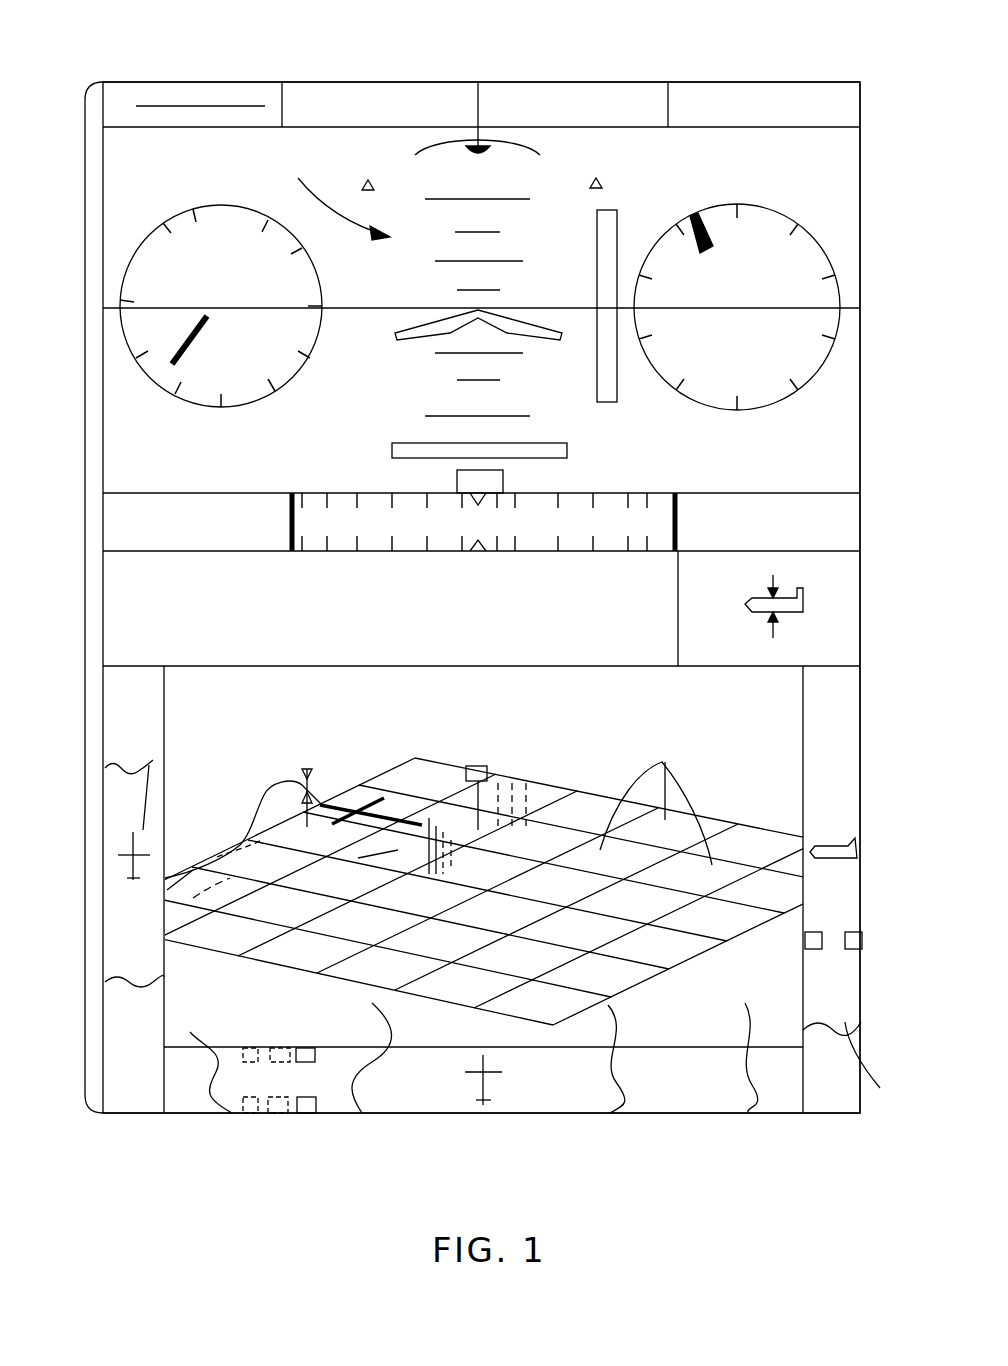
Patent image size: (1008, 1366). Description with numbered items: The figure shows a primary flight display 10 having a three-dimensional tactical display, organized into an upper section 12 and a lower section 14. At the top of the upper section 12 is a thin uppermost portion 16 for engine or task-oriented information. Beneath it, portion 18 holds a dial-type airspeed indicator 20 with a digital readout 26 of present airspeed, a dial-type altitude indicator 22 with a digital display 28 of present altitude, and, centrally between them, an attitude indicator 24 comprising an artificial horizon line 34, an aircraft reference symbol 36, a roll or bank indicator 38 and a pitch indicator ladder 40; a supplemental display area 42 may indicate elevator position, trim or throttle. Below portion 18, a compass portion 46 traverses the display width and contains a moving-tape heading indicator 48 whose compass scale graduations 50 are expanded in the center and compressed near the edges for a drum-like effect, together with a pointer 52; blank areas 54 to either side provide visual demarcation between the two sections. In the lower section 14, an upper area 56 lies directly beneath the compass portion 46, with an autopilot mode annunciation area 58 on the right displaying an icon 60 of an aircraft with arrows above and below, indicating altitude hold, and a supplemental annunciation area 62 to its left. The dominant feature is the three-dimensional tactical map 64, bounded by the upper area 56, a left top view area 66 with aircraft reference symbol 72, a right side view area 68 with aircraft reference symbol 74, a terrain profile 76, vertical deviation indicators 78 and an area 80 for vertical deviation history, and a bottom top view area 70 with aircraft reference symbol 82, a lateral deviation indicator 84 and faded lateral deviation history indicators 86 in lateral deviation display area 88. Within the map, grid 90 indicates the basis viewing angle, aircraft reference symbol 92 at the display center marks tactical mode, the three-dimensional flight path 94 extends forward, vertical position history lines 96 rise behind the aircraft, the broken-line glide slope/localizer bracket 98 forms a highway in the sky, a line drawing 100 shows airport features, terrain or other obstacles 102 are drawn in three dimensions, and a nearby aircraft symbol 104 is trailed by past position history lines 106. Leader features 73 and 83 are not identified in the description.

The primary flight display with three-dimensional tactical display 10 is at (198, 68).
The upper section 12 is at (88, 135).
The lower section 14 is at (88, 1105).
The uppermost portion 16 is at (862, 84).
The instrument portion 18 is at (864, 133).
The airspeed indicator 20 is at (205, 220).
The altitude indicator 22 is at (815, 250).
The attitude indicator 24 is at (326, 194).
The digital readout 26 is at (200, 290).
The digital display 28 is at (754, 292).
The artificial horizon line 34 is at (366, 308).
The aircraft reference symbol 36 is at (410, 338).
The roll or bank indicator 38 is at (432, 150).
The pitch indicator ladder 40 is at (494, 415).
The supplemental display area 42 is at (622, 233).
The compass portion 46 is at (864, 495).
The compass heading indicator 48 is at (288, 522).
The compass scale graduations 50 is at (518, 497).
The pointer 52 is at (458, 482).
The blank areas 54 is at (170, 540).
The upper area 56 is at (864, 556).
The autopilot mode annunciation area 58 is at (719, 590).
The autopilot status symbol 60 is at (806, 596).
The supplemental annunciation area 62 is at (628, 608).
The three-dimensional tactical map 64 is at (338, 712).
The top view area 66 is at (164, 1125).
The side view area 68 is at (860, 1125).
The top view area 70 is at (800, 1125).
The aircraft reference symbol 72 is at (144, 762).
The strip boundary 73 is at (148, 762).
The aircraft reference symbol 74 is at (832, 840).
The profile of underlying terrain 76 is at (857, 1061).
The vertical deviation indicators 78 is at (860, 935).
The vertical deviation history area 80 is at (868, 942).
The aircraft reference symbol 82 is at (472, 1070).
The tear lines 83 is at (470, 1042).
The lateral deviation indicator 84 is at (305, 1113).
The lateral deviation history indicators 86 is at (280, 1113).
The lateral deviation display area 88 is at (317, 1043).
The grid 90 is at (732, 938).
The aircraft reference symbol 92 is at (376, 855).
The three-dimensional flight path 94 is at (283, 782).
The position history lines 96 is at (440, 876).
The glide slope/localizer bracket 98 is at (247, 824).
The line drawing of airport features 100 is at (180, 870).
The terrain or other obstacles 102 is at (700, 775).
The nearby aircraft reference symbol 104 is at (476, 766).
The past position history lines 106 is at (498, 786).